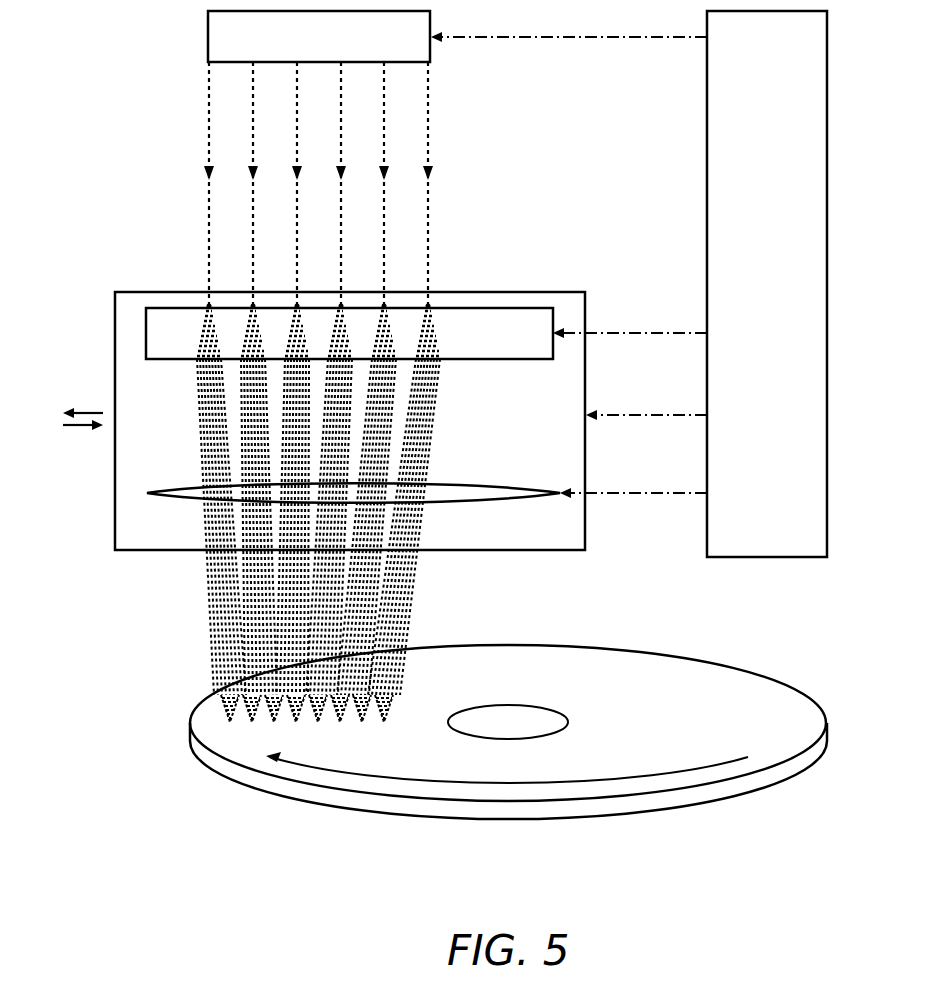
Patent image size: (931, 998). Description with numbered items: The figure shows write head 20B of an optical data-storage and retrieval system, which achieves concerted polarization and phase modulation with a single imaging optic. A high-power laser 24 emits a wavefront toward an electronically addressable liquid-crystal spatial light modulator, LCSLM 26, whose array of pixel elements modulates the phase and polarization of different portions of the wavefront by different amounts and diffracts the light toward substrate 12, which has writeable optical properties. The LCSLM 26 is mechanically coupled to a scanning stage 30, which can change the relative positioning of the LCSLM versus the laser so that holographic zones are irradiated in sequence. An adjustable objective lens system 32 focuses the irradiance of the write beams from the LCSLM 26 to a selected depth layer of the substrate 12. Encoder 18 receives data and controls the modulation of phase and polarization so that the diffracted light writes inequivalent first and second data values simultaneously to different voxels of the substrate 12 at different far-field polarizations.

The write head 20B is at (80, 106).
The laser 24 is at (319, 36).
The encoder 18 is at (767, 284).
The liquid-crystal spatial light modulator (LCSLM) 26 is at (349, 333).
The scanning stage 30 is at (324, 421).
The adjustable objective lens system 32 is at (147, 493).
The substrate 12 is at (508, 732).